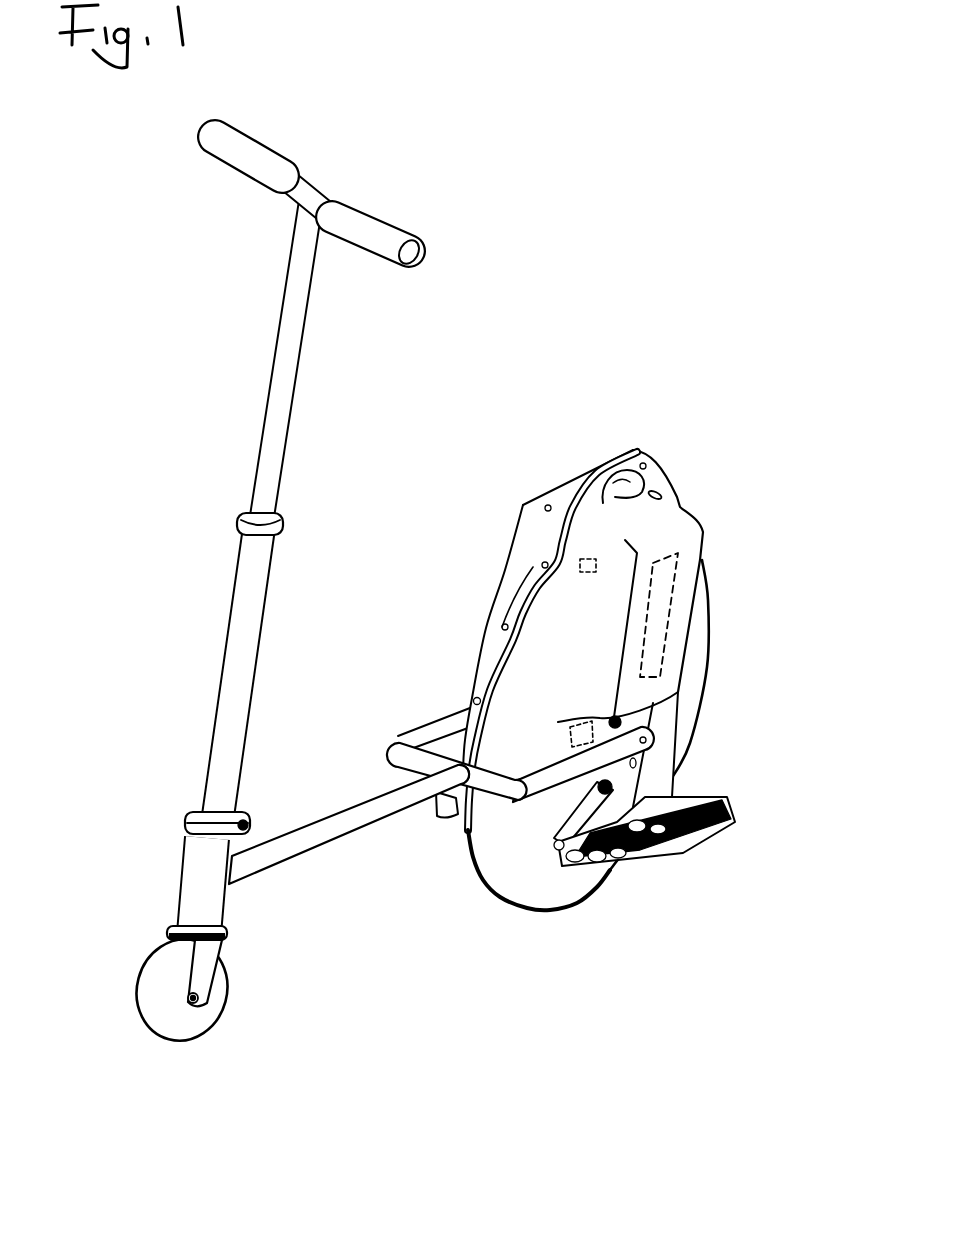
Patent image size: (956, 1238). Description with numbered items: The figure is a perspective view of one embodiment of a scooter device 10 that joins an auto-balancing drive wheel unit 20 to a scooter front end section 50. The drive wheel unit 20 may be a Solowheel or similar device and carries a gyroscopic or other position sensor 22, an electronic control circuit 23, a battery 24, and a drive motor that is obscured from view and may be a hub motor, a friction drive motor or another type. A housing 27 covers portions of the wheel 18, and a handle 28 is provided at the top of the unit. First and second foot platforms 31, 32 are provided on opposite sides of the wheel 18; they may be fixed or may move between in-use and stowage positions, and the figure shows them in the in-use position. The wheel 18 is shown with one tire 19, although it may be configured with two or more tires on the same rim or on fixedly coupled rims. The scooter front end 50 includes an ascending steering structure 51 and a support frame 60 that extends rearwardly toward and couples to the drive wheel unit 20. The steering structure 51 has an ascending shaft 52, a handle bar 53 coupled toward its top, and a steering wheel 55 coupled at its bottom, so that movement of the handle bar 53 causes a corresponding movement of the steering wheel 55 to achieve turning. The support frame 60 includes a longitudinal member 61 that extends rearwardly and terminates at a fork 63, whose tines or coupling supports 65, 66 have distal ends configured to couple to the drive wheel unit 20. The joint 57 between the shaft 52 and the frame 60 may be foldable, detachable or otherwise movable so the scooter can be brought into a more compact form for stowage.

The scooter device 10 is at (654, 250).
The wheel 18 is at (627, 891).
The tire 19 is at (580, 908).
The auto-balancing drive wheel unit 20 is at (724, 440).
The position sensor 22 is at (592, 562).
The electronic control circuit 23 is at (578, 723).
The battery 24 is at (670, 610).
The housing 27 is at (697, 735).
The handle 28 is at (615, 447).
The first foot platform 31 is at (735, 820).
The second foot platform 32 is at (435, 815).
The scooter front end section 50 is at (381, 1015).
The ascending steering structure 51 is at (188, 403).
The ascending shaft 52 is at (240, 577).
The handle bar 53 is at (373, 195).
The steering wheel 55 is at (228, 1007).
The joint 57 is at (237, 883).
The support frame 60 is at (323, 711).
The longitudinal member 61 is at (333, 850).
The fork 63 is at (381, 769).
The coupling support 65 is at (522, 788).
The coupling support 66 is at (437, 745).